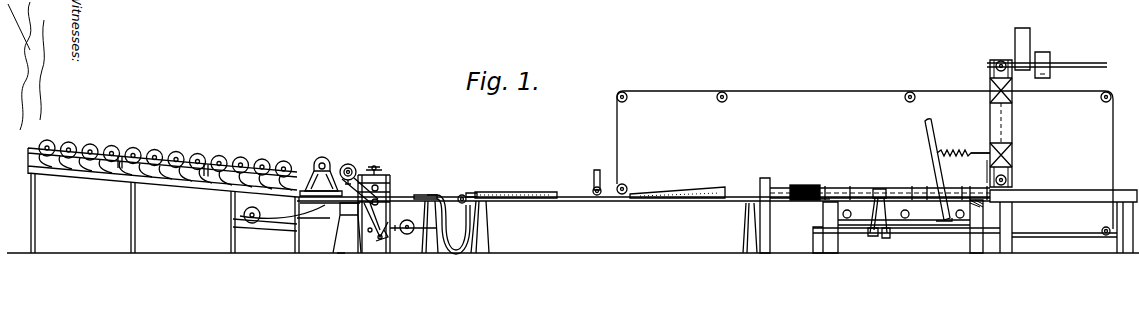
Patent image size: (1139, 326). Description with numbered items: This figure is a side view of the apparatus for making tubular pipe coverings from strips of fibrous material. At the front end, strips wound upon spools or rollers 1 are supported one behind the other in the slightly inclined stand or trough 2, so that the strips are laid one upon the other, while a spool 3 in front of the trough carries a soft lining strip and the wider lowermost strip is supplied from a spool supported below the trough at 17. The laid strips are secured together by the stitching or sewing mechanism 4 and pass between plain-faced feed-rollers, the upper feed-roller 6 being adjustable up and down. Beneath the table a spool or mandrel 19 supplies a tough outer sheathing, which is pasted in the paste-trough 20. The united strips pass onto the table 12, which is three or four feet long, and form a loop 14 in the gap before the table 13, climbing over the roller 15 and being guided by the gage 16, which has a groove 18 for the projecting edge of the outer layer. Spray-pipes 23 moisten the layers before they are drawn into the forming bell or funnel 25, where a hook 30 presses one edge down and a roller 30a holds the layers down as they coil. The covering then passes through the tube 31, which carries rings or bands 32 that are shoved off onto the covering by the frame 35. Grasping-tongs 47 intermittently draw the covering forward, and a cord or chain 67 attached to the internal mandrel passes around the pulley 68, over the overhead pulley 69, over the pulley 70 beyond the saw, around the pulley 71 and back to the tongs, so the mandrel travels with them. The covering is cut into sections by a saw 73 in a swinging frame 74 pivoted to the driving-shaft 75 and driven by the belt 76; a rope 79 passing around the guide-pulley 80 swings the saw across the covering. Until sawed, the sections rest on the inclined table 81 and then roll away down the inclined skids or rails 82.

The spools or rollers 1 is at (190, 153).
The stand or trough 2 is at (176, 200).
The spool 3 is at (320, 158).
The stitching or sewing mechanism 4 is at (352, 163).
The feed-roller 6 is at (392, 190).
The table 12 is at (422, 197).
The table 13 is at (515, 207).
The loop 14 is at (460, 252).
The roller 15 is at (461, 194).
The gage or guide 16 is at (520, 191).
The spool support for lowermost strip 17 is at (252, 210).
The crevice or groove 18 is at (937, 172).
The spool or mandrel 19 is at (413, 219).
The paste-trough 20 is at (379, 248).
The spray-pipes 23 is at (476, 193).
The forming bell or funnel 25 is at (684, 192).
The hook 30 is at (754, 211).
The roller 30a is at (593, 190).
The tube 31 is at (810, 188).
The rings or bands 32 is at (815, 201).
The frame 35 is at (795, 184).
The grasping-tongs 47 is at (880, 188).
The cord or chain 67 is at (848, 93).
The pulley 68 is at (629, 184).
The pulley 69 is at (628, 98).
The pulley 70 is at (1103, 101).
The pulley 71 is at (1101, 229).
The saw 73 is at (990, 172).
The swinging frame 74 is at (1012, 128).
The driving-shaft 75 is at (1071, 65).
The belt 76 is at (988, 122).
The rope 79 is at (980, 153).
The guide-pulley 80 is at (963, 146).
The inclined table 81 is at (1077, 192).
The inclined skids or rails 82 is at (1013, 221).